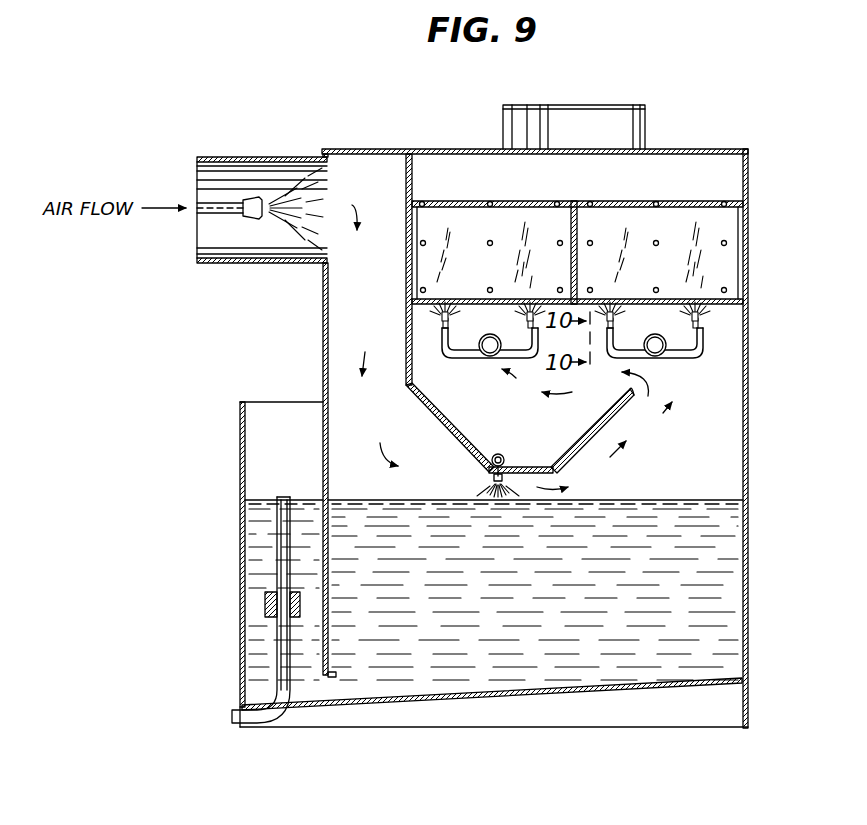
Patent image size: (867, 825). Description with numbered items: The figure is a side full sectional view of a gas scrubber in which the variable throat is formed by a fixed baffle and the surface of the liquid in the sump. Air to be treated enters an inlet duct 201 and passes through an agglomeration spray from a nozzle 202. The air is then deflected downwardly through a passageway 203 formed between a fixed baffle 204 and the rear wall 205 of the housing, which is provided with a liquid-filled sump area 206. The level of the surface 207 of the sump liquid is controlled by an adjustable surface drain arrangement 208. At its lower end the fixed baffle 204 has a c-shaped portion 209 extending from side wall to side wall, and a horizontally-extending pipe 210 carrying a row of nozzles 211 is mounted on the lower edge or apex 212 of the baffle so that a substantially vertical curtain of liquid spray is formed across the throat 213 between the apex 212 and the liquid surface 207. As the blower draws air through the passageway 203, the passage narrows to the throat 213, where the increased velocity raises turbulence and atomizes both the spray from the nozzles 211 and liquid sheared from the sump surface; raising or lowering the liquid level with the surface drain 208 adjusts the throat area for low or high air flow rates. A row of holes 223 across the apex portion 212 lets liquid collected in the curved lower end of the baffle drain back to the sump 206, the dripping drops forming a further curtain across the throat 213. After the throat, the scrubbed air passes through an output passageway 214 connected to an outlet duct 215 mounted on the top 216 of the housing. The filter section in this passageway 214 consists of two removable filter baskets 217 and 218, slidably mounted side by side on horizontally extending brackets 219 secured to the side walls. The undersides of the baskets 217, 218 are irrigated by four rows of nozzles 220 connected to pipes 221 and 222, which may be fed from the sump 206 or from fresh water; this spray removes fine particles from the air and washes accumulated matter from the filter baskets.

The inlet duct 201 is at (205, 263).
The nozzle 202 is at (255, 199).
The passageway 203 is at (345, 296).
The fixed baffle 204 is at (405, 322).
The rear wall 205 is at (325, 360).
The sump area 206 is at (672, 595).
The surface of the liquid 207 is at (692, 498).
The adjustable surface drain arrangement 208 is at (265, 600).
The c-shaped portion 209 is at (432, 412).
The horizontally-extending pipe 210 is at (512, 442).
The nozzles 211 is at (493, 480).
The apex 212 is at (517, 478).
The throat 213 is at (525, 485).
The passageway 214 is at (575, 180).
The outlet duct 215 is at (648, 113).
The top 216 is at (362, 150).
The filter basket 217 is at (497, 223).
The filter basket 218 is at (677, 223).
The brackets 219 is at (731, 311).
The nozzles 220 is at (528, 322).
The pipe 221 is at (655, 358).
The pipe 222 is at (490, 358).
The holes 223 is at (538, 467).